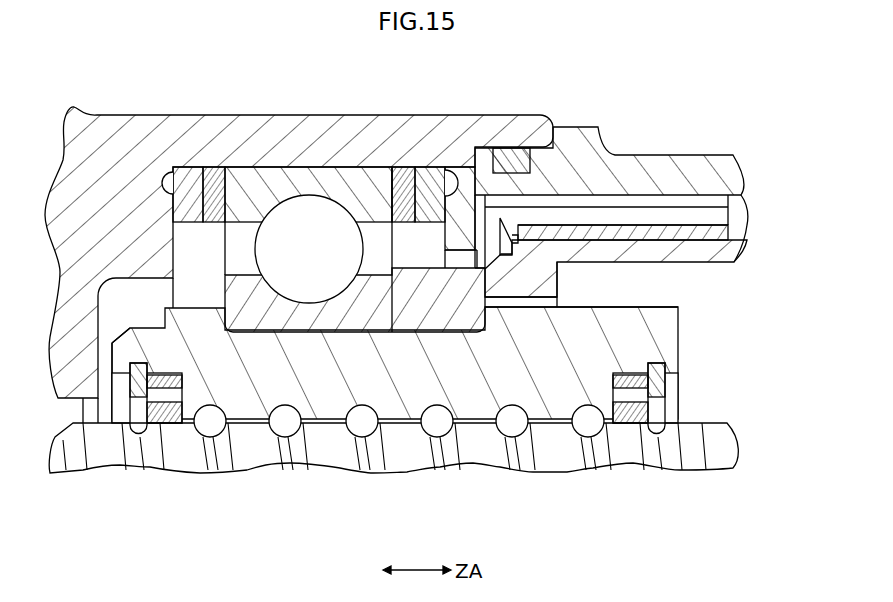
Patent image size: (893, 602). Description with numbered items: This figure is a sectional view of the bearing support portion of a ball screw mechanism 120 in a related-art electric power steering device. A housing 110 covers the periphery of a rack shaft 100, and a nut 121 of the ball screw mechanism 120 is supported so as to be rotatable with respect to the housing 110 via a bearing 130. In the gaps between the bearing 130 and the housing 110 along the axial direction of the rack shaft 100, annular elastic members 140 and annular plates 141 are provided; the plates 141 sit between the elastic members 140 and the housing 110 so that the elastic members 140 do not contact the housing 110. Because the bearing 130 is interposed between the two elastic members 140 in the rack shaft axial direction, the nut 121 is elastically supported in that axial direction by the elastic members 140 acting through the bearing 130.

The rack shaft 100 is at (703, 423).
The housing 110 is at (598, 127).
The ball screw mechanism 120 is at (682, 325).
The nut 121 is at (594, 305).
The bearing 130 is at (330, 173).
The elastic member 140 is at (220, 172).
The plate 141 is at (193, 178).